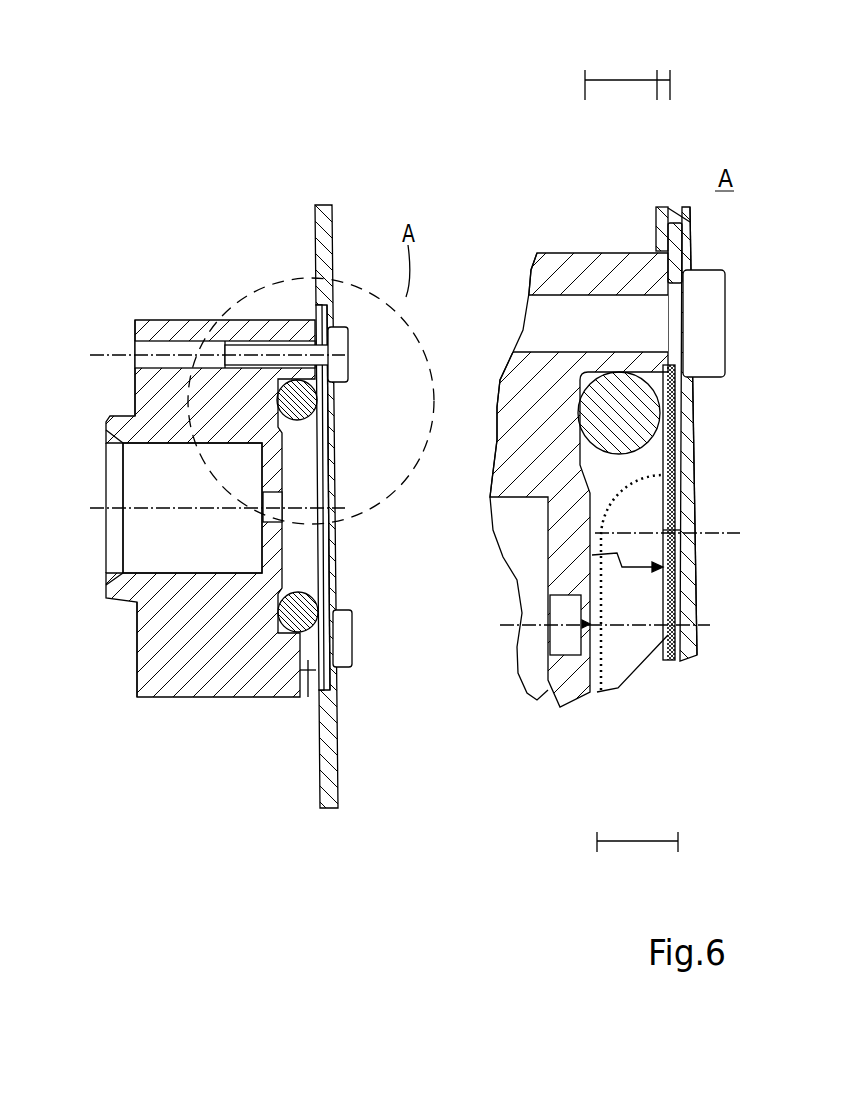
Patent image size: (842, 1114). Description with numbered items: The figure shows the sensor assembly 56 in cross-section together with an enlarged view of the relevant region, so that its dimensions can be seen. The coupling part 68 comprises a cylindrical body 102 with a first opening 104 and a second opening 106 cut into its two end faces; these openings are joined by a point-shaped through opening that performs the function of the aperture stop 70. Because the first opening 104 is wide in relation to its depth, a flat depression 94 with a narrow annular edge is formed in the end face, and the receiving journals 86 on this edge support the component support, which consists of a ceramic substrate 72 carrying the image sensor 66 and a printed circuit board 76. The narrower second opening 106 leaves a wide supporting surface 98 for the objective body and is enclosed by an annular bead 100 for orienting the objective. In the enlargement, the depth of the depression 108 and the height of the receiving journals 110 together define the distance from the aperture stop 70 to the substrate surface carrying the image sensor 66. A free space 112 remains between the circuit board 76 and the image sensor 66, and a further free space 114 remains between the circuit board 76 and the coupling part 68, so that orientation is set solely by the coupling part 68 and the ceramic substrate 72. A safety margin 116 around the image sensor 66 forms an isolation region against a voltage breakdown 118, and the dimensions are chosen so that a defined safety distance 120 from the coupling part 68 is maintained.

The sensor assembly 56 is at (297, 165).
The image sensor 66 is at (315, 498).
The coupling part 68 is at (146, 729).
The aperture stop 70 is at (283, 505).
The ceramic substrate 72 is at (323, 597).
The printed circuit board 76 is at (332, 757).
The receiving journals 86 is at (308, 663).
The depression 94 is at (580, 437).
The supporting surface 98 is at (136, 648).
The annular bead 100 is at (118, 428).
The cylindrical body 102 is at (242, 668).
The first opening 104 is at (283, 497).
The second opening 106 is at (92, 543).
The depth of the depression 108 is at (622, 78).
The height of the receiving journals 110 is at (659, 77).
The free space 112 is at (660, 200).
The further free space 114 is at (670, 530).
The safety margin 116 is at (605, 657).
The voltage breakdown 118 is at (620, 665).
The safety distance 120 is at (637, 842).